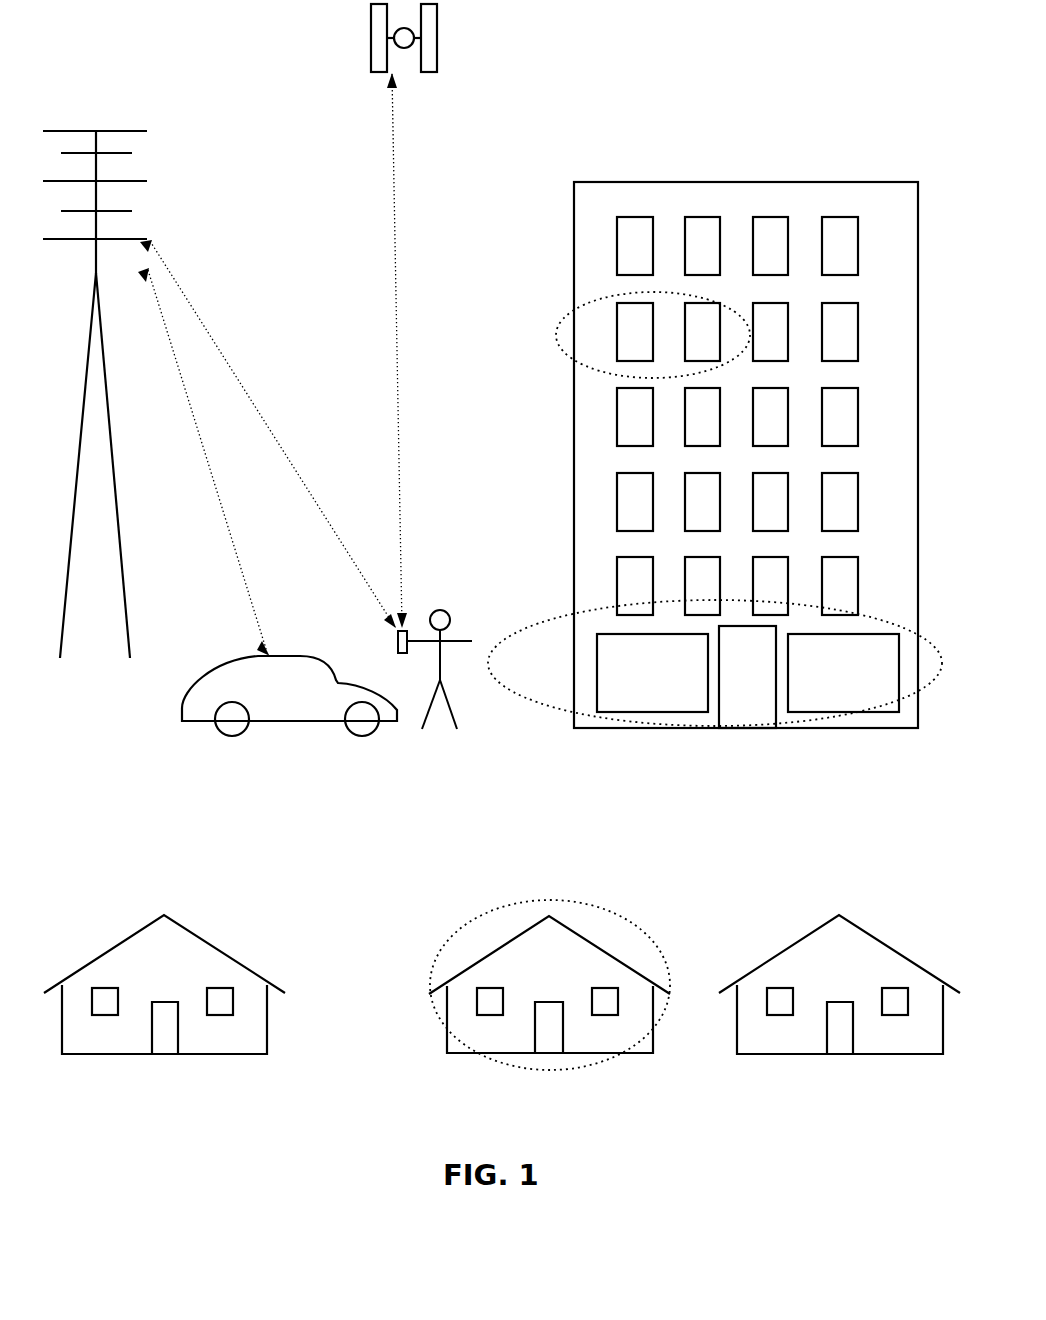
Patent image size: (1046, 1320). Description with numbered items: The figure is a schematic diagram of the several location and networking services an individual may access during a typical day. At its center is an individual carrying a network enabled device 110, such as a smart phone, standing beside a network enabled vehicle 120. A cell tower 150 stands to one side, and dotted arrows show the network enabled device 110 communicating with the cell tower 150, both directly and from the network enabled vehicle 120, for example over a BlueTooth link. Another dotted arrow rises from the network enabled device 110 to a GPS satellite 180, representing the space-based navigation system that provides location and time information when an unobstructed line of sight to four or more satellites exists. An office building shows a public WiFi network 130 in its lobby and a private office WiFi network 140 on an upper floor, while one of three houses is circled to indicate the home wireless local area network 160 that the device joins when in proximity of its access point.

The network enabled device 110 is at (407, 632).
The network enabled vehicle 120 is at (299, 705).
The public WiFi network 130 is at (545, 710).
The private office WiFi network 140 is at (557, 335).
The cell tower 150 is at (72, 131).
The home local area network (WLAN) 160 is at (638, 927).
The GPS satellites 180 is at (375, 42).